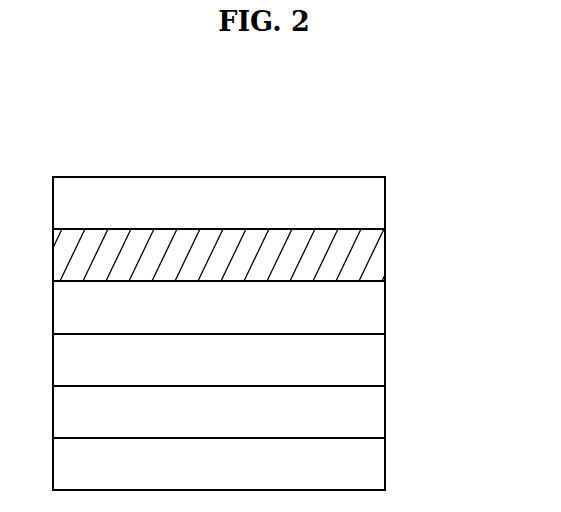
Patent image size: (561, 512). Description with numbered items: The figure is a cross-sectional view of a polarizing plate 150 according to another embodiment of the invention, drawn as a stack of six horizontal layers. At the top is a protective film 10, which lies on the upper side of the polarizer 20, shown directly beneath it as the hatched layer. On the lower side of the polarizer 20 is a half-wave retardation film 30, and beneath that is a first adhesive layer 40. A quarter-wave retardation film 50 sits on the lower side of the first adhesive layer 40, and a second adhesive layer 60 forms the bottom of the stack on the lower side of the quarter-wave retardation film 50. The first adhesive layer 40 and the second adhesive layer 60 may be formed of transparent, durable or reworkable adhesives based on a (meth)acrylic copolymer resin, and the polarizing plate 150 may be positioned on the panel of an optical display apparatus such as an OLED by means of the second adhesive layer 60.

The polarizing plate 150 is at (397, 143).
The protective film 10 is at (372, 201).
The polarizer 20 is at (372, 259).
The λ/2 retardation film 30 is at (372, 311).
The first adhesive layer 40 is at (372, 360).
The λ/4 retardation film 50 is at (372, 412).
The second adhesive layer 60 is at (372, 464).